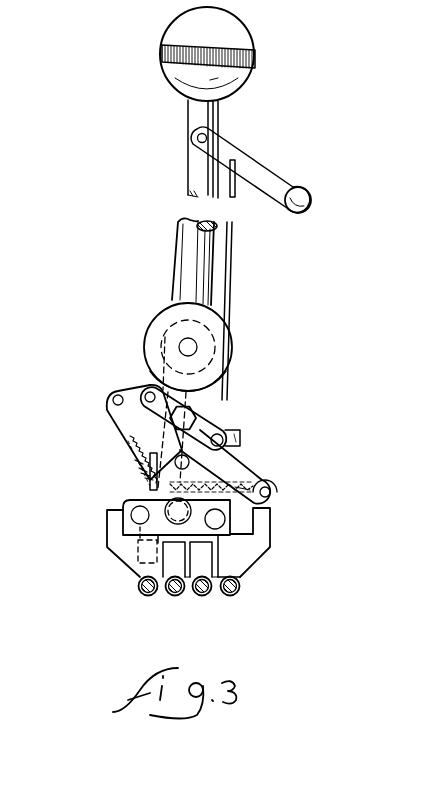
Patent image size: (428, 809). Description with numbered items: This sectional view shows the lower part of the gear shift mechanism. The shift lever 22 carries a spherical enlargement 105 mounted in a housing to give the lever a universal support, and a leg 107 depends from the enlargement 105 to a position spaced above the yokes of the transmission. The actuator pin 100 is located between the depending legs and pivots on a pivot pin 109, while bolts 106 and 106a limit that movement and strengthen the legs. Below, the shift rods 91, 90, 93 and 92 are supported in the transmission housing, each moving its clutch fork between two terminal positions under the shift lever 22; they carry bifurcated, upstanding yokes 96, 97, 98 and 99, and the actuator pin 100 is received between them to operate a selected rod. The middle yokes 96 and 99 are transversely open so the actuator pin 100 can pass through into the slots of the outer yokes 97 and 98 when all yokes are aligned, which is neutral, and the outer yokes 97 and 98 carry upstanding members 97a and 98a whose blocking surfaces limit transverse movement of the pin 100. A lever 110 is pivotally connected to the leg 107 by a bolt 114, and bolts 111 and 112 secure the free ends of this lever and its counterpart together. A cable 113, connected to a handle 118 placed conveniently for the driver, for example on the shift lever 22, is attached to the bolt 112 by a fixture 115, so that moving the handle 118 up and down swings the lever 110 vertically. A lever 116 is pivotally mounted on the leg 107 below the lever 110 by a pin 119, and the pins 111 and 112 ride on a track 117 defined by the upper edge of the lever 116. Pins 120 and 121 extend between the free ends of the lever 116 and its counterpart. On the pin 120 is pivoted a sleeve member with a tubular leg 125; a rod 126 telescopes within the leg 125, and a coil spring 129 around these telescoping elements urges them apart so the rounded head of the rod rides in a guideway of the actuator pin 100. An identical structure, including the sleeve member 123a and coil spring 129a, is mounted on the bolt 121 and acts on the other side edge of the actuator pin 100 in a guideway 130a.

The shift lever 22 is at (197, 116).
The handle 118 is at (303, 191).
The cable 113 is at (229, 278).
The spherical enlargement 105 is at (165, 310).
The pivot pin 109 is at (194, 345).
The bolt 111 is at (146, 388).
The pin 120 is at (115, 397).
The lever 116 is at (113, 413).
The bolt 114 is at (205, 398).
The lever 110 is at (200, 426).
The fixture 115 is at (240, 436).
The bolt 112 is at (232, 446).
The track 117 is at (251, 463).
The pin 121 is at (272, 487).
The pin 119 is at (203, 466).
The tubular leg 125 is at (127, 431).
The coil spring 129 is at (137, 457).
The rod 126 is at (140, 460).
The sleeve member 123a is at (277, 497).
The coil spring 129a is at (270, 510).
The guideway 130a is at (150, 486).
The leg 107 is at (136, 502).
The bolt 106 is at (132, 519).
The bolt 106a is at (255, 535).
The upstanding member 97a is at (105, 543).
The upstanding member 98a is at (265, 522).
The actuator pin 100 is at (135, 552).
The yoke 97 is at (142, 580).
The yoke 98 is at (238, 578).
The shift rod 91 is at (140, 594).
The shift rod 90 is at (172, 594).
The shift rod 93 is at (200, 594).
The shift rod 92 is at (238, 592).
The yoke 96 is at (188, 592).
The yoke 99 is at (214, 590).